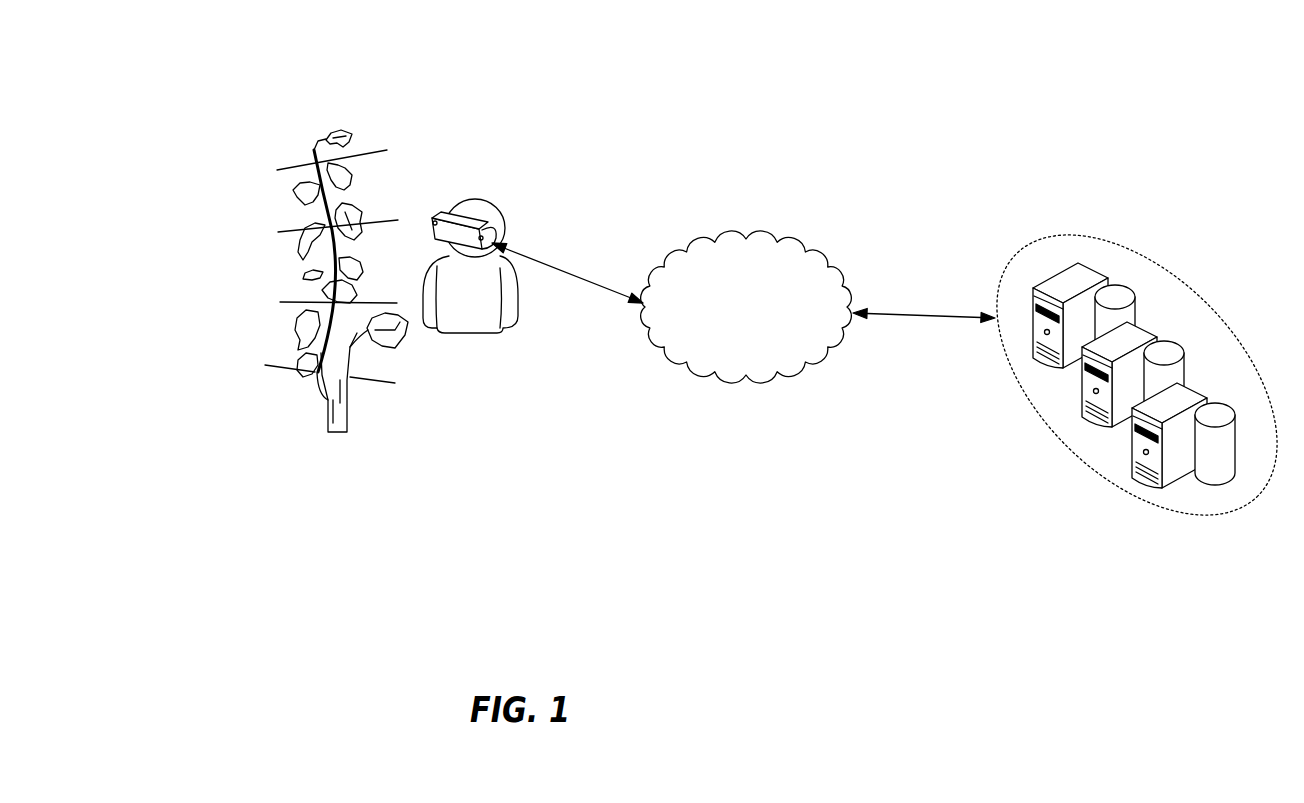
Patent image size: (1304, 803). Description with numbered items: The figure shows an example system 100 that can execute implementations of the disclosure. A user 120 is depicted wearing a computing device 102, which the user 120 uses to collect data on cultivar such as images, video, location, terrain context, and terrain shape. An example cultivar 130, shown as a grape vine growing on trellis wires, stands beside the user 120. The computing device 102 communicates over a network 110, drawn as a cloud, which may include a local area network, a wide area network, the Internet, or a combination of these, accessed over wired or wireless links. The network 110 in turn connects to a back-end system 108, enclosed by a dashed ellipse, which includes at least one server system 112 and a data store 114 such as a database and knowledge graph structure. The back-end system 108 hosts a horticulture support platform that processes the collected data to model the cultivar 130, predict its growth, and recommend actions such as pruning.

The example system 100 is at (893, 90).
The computing device 102 is at (473, 226).
The back-end system 108 is at (1192, 290).
The network 110 is at (745, 238).
The server system 112 is at (1060, 270).
The data store 114 is at (1118, 283).
The user 120 is at (502, 221).
The cultivar 130 is at (247, 202).